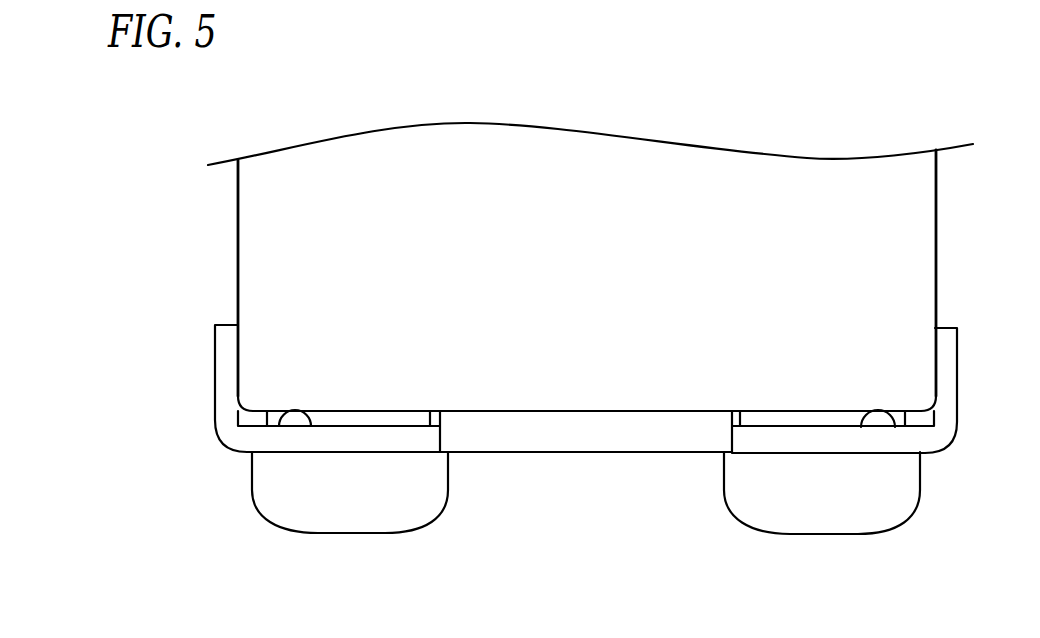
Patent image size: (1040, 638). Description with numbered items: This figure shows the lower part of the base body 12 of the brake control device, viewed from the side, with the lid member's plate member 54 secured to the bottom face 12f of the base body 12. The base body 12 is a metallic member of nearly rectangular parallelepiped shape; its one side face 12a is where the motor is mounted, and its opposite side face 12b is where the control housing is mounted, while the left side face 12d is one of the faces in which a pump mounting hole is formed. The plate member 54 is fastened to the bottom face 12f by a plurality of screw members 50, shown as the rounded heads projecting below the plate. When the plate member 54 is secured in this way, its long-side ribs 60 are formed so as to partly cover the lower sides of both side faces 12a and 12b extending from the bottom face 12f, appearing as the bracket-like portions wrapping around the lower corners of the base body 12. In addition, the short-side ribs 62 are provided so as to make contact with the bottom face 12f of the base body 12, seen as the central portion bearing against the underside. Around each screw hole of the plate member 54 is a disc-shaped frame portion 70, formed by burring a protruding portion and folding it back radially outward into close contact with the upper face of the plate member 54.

The base body 12 is at (586, 299).
The one side face 12a is at (937, 273).
The other side face 12b is at (237, 268).
The left side face 12d is at (590, 192).
The bottom face 12f is at (627, 412).
The screw member 50 is at (347, 533).
The plate member 54 is at (586, 468).
The long-side rib 60 is at (214, 357).
The short-side rib 62 is at (575, 423).
The frame portion 70 is at (383, 430).